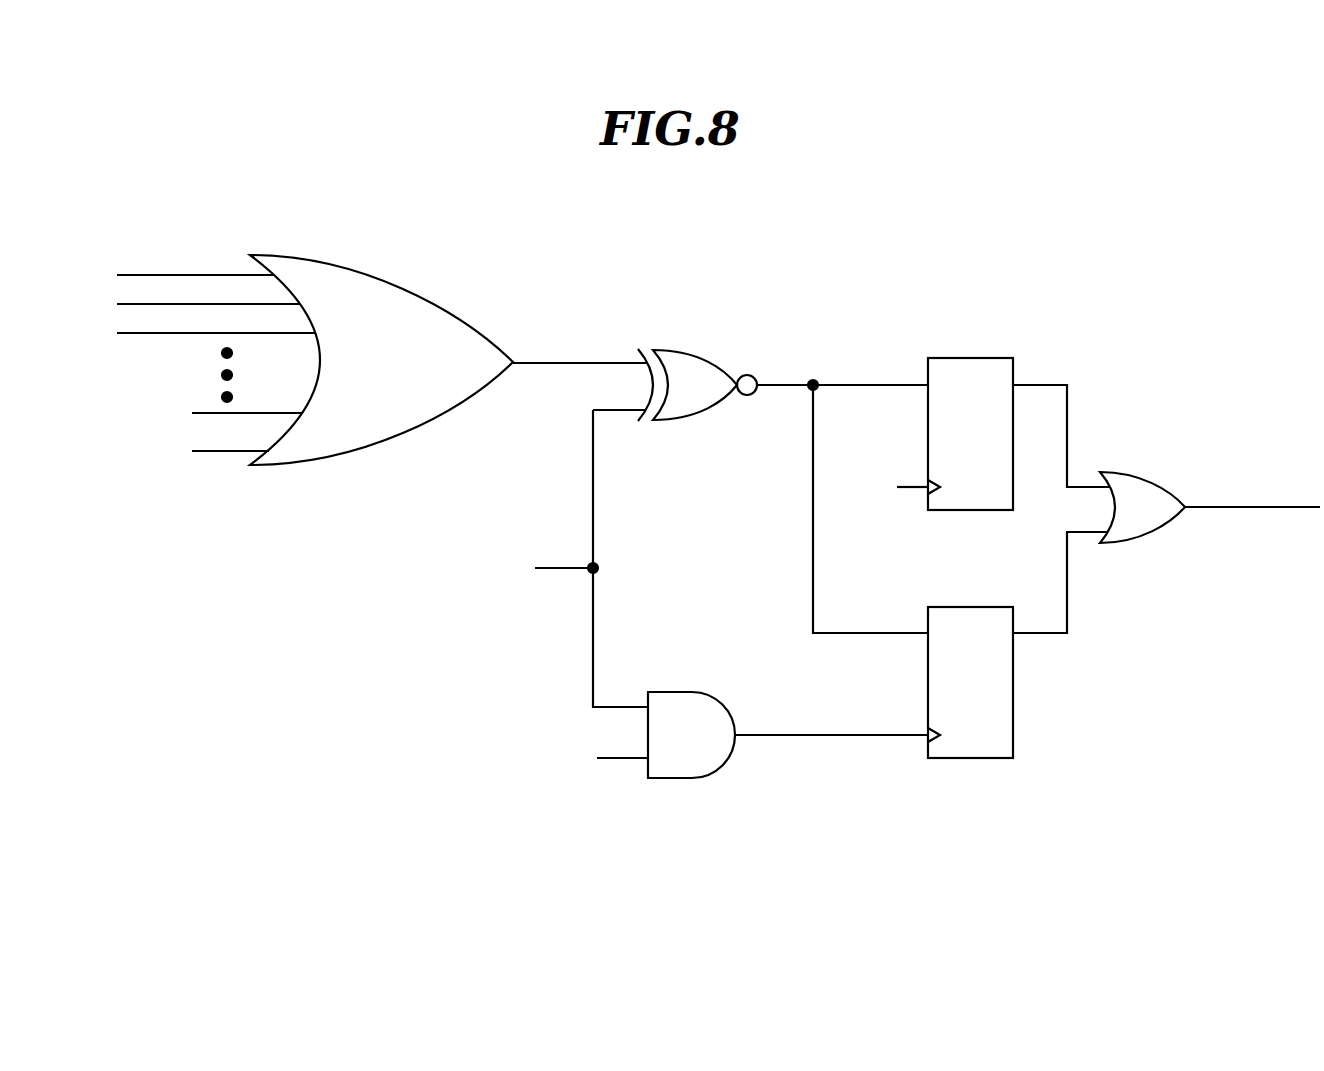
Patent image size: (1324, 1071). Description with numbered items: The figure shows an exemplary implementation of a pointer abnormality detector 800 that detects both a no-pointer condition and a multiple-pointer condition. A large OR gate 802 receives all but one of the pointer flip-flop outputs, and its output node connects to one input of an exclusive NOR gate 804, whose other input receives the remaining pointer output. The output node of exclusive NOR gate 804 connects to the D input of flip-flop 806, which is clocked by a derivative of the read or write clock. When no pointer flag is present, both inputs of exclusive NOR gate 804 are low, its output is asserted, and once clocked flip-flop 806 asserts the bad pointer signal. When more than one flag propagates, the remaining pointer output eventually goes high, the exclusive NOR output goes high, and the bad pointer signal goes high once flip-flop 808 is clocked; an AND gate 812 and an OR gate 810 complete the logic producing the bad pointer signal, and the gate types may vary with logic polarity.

The pointer abnormality detector 800 is at (976, 241).
The OR gate 802 is at (403, 263).
The exclusive NOR gate 804 is at (697, 352).
The flip-flop 806 is at (942, 510).
The flip-flop 808 is at (942, 758).
The OR gate 810 is at (1123, 470).
The AND gate 812 is at (687, 778).